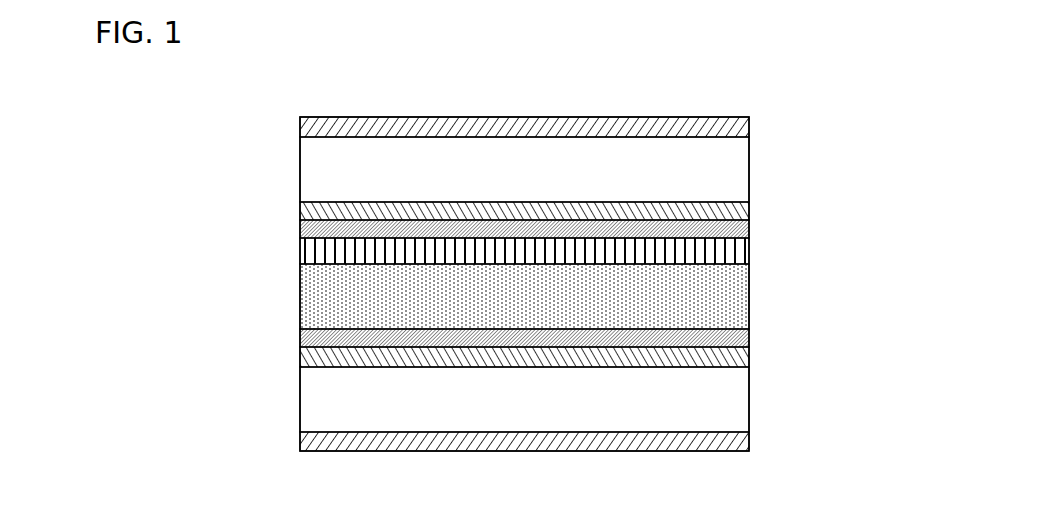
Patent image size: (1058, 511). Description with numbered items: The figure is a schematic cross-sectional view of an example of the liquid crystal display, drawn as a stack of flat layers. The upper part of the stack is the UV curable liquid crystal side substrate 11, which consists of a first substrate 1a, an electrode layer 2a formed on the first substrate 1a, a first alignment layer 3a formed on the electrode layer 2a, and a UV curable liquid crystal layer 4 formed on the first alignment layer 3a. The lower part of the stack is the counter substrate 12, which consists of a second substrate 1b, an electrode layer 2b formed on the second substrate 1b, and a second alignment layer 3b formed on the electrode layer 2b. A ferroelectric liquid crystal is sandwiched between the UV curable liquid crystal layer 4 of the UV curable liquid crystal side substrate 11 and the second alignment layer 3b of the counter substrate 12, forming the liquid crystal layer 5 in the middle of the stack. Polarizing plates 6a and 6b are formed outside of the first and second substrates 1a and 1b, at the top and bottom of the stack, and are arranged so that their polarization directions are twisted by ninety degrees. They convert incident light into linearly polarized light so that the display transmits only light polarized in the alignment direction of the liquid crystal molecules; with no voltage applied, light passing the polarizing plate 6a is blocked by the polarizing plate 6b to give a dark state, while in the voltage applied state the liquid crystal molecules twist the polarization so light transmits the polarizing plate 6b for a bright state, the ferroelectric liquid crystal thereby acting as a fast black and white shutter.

The polarizing plate 6a is at (730, 120).
The first substrate 1a is at (730, 167).
The electrode layer 2a is at (748, 205).
The first alignment layer 3a is at (748, 230).
The UV curable liquid crystal layer 4 is at (730, 253).
The liquid crystal layer 5 is at (730, 295).
The second alignment layer 3b is at (748, 338).
The electrode layer 2b is at (748, 357).
The second substrate 1b is at (730, 400).
The polarizing plate 6b is at (748, 438).
The UV curable liquid crystal side substrate 11 is at (622, 202).
The counter substrate 12 is at (622, 377).